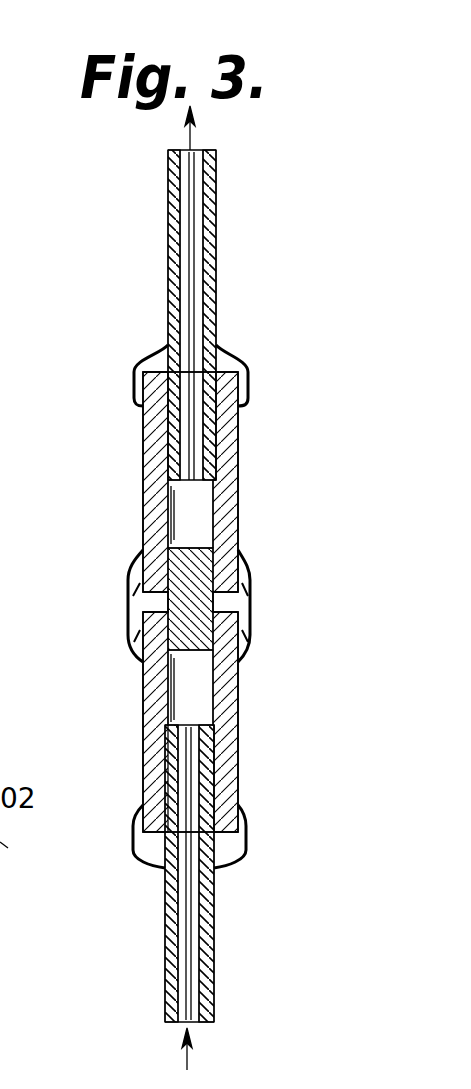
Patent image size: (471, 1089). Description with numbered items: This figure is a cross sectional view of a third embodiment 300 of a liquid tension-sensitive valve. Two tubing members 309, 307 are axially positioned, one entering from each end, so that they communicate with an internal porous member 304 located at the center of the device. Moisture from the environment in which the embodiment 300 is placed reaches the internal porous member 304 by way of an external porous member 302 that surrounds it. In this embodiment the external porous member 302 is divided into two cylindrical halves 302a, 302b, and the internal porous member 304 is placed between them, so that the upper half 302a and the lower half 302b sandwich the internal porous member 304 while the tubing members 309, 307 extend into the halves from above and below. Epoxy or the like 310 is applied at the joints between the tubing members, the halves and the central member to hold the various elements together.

The third embodiment 300 is at (138, 488).
The external porous member 302 is at (150, 427).
The cylindrical half 302a is at (286, 455).
The cylindrical half 302b is at (284, 736).
The internal porous member 304 is at (196, 568).
The tubing member 307 is at (205, 968).
The tubing member 309 is at (176, 201).
The epoxy 310 is at (228, 352).